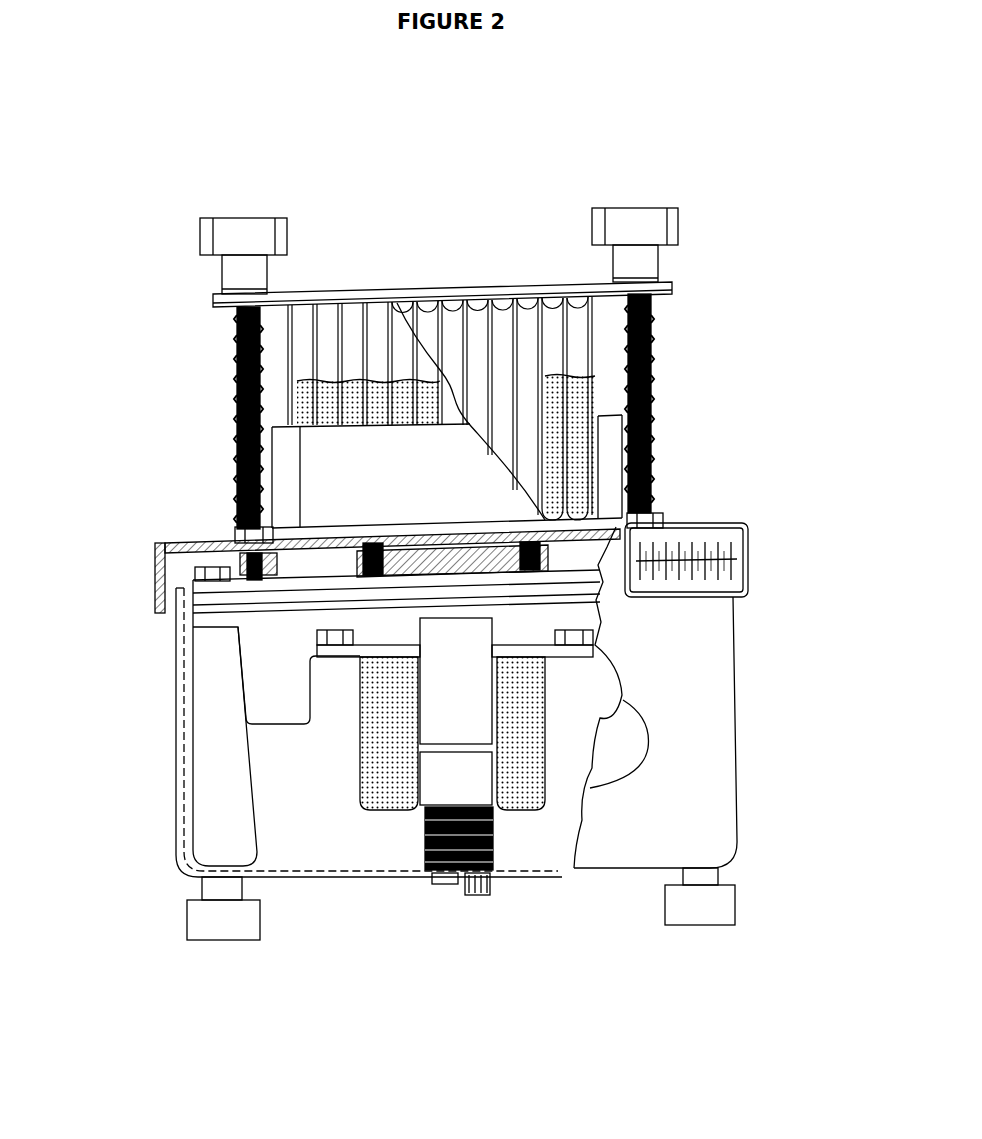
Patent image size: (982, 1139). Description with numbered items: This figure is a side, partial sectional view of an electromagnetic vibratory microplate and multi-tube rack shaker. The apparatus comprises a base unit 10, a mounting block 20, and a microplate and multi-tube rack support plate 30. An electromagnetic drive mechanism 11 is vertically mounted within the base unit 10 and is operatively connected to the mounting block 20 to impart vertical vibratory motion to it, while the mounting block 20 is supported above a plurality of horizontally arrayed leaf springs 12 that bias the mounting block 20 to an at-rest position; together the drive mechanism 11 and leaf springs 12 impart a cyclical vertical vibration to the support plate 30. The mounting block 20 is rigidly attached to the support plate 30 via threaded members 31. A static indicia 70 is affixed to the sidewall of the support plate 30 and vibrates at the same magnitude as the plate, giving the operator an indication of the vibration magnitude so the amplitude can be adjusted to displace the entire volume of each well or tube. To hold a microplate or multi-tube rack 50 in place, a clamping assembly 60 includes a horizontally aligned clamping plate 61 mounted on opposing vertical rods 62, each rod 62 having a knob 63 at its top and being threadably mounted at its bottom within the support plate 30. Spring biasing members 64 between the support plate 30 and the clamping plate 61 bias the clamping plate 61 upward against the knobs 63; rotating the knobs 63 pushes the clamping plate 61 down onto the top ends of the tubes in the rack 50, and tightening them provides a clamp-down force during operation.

The base unit 10 is at (737, 707).
The electromagnetic drive mechanism 11 is at (210, 772).
The leaf springs 12 is at (587, 585).
The mounting block 20 is at (400, 577).
The microplate and multi-tube rack support plate 30 is at (152, 548).
The threaded members 31 is at (540, 537).
The multi-tube rack 50 is at (593, 442).
The clamping assembly 60 is at (706, 209).
The clamping plate 61 is at (650, 290).
The vertical rods 62 is at (237, 392).
The knobs 63 is at (247, 217).
The spring biasing members 64 is at (242, 475).
The static indicia 70 is at (747, 527).